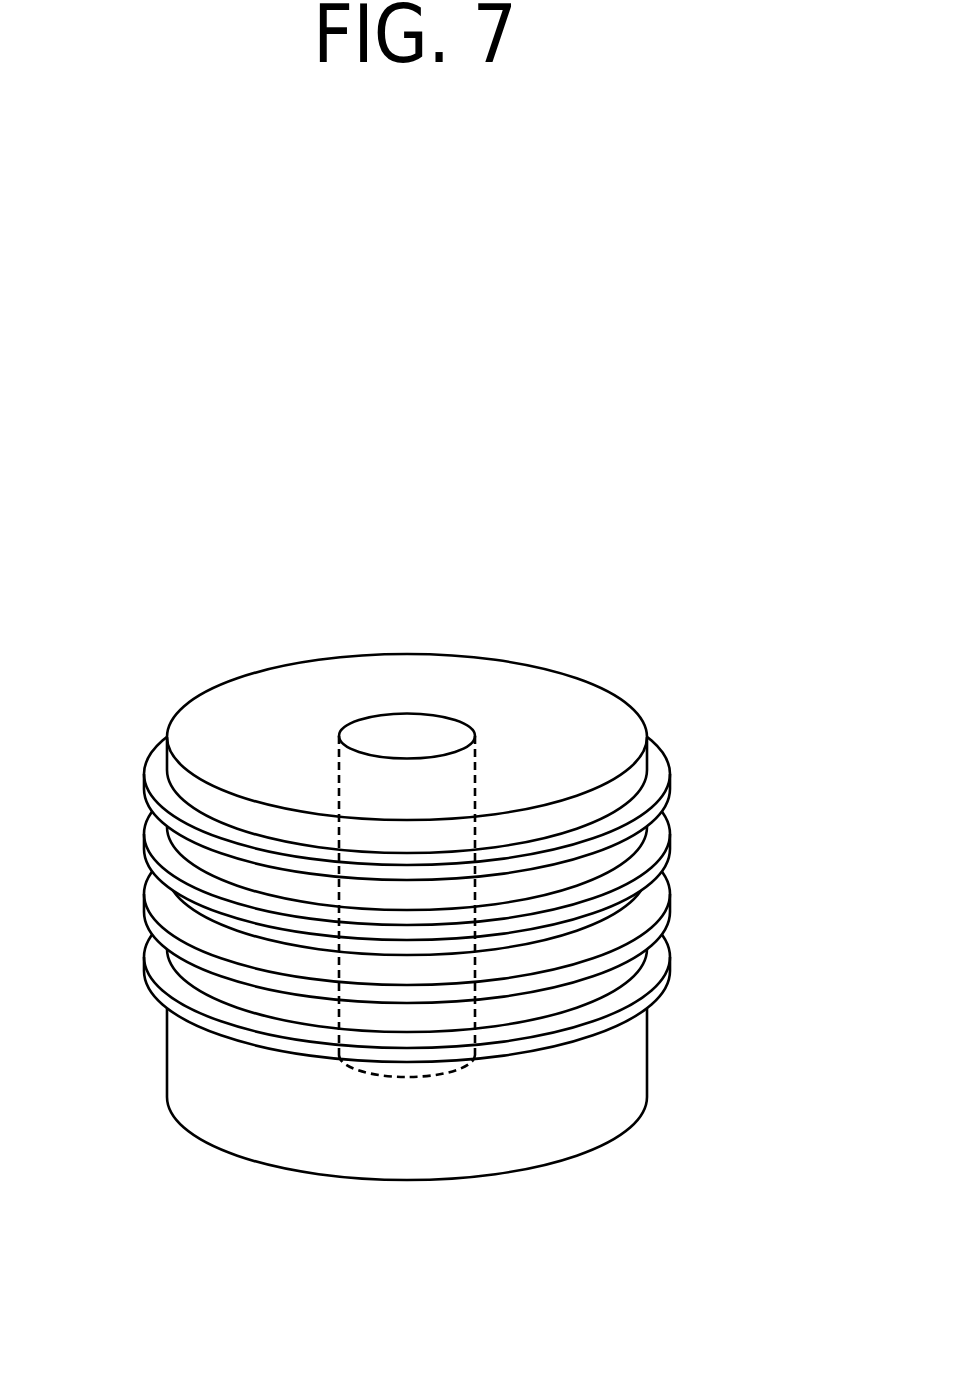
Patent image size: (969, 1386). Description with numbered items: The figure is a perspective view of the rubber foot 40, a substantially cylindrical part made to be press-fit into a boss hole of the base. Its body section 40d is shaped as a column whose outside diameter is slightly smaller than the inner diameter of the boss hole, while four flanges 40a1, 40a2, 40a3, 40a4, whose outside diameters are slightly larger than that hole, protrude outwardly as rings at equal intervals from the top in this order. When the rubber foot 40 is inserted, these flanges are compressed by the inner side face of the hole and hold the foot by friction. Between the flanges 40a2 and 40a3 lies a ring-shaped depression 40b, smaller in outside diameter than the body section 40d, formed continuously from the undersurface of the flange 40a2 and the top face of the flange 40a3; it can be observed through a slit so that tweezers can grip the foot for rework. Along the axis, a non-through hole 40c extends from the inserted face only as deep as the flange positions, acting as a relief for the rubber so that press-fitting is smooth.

The rubber foot 40 is at (460, 929).
The flange 40a1 is at (671, 767).
The flange 40a2 is at (677, 836).
The flange 40a3 is at (670, 895).
The flange 40a4 is at (670, 967).
The ring-shaped depression 40b is at (303, 943).
The non-through hole 40c is at (405, 731).
The body section 40d is at (298, 1175).